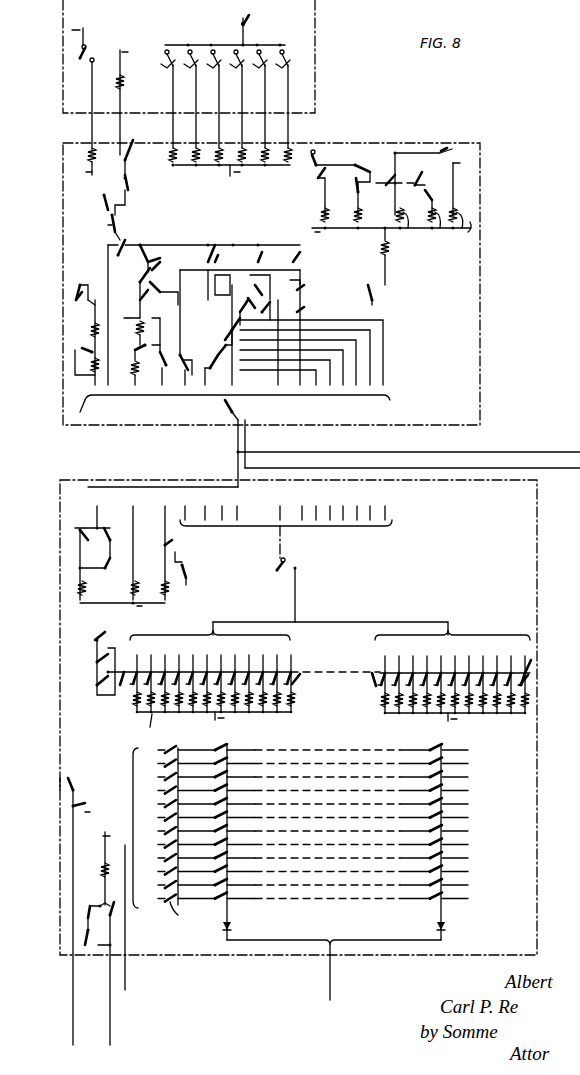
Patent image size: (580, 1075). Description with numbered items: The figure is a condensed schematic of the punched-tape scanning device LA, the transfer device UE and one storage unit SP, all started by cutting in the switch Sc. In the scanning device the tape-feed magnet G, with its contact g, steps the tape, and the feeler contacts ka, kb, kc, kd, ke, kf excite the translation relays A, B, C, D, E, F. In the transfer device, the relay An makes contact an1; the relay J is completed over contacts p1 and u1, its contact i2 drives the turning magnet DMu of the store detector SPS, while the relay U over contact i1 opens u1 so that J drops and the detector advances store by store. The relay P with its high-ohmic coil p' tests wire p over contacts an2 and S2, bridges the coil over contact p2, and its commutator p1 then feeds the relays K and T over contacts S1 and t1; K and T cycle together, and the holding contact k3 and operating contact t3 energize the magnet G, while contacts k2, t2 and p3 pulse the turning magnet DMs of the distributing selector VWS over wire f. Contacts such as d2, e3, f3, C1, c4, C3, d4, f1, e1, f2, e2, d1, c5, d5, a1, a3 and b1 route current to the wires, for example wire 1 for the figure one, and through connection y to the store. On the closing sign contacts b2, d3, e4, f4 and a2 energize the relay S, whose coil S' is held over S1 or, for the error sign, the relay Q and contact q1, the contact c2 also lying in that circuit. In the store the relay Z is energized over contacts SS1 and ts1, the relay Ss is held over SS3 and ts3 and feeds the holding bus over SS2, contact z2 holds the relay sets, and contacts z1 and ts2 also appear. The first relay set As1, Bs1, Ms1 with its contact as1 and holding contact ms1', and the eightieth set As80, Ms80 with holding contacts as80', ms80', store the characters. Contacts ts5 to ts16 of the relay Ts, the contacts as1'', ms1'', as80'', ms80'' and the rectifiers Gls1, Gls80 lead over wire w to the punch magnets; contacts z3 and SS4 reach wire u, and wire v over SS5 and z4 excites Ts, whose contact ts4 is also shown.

The punched-tape scanning device LA is at (317, 95).
The transfer device UE is at (482, 300).
The storage unit SP is at (540, 575).
The switch Sc is at (76, 52).
The relay An is at (88, 153).
The magnet of the tape movement G is at (127, 102).
The operating contact t3 is at (135, 149).
The holding contact k3 is at (130, 190).
The contact p3 is at (100, 202).
The contact t2 is at (104, 227).
The contact g is at (250, 22).
The contact ka is at (157, 99).
The contact kb is at (179, 85).
The contact kc is at (206, 85).
The contact kd is at (244, 48).
The contact ke is at (267, 48).
The contact kf is at (290, 55).
The relay A is at (168, 166).
The relay B is at (191, 168).
The relay C is at (213, 168).
The relay D is at (240, 168).
The relay E is at (262, 168).
The relay F is at (285, 168).
The contact an1 is at (318, 160).
The contactor i1 is at (327, 190).
The alternating contactor p1 is at (375, 160).
The holding contact u1 is at (346, 195).
The contact q1 is at (384, 184).
The commutator s1 S1 is at (417, 169).
The contact t1 is at (437, 181).
The relay U is at (320, 215).
The relay J is at (362, 215).
The high-ohmic coil S' is at (406, 228).
The relay K is at (433, 228).
The relay T is at (460, 228).
The turning magnet DMu is at (388, 252).
The contact i2 is at (385, 285).
The holding contact k2 is at (127, 246).
The contact b2 is at (150, 258).
The contact c2 is at (160, 262).
The contact d3 is at (140, 285).
The contact e4 is at (165, 294).
The contact f4 is at (140, 300).
The relay Q is at (145, 325).
The holding contact a2 is at (128, 351).
The relay S is at (123, 372).
The contact a3 is at (166, 359).
The contact b1 is at (240, 327).
The contact s2 S2 is at (85, 287).
The contact an2 is at (78, 295).
The relay P is at (92, 330).
The contact p2 is at (80, 350).
The high-ohmic coil P' p' is at (65, 368).
The store detector SPS is at (250, 410).
The contact a1 is at (225, 405).
The wire 1 is at (236, 425).
The wire y is at (246, 425).
The holding contact d2 is at (252, 232).
The holding contact e3 is at (280, 250).
The holding contact f3 is at (302, 270).
The working contact c1 C1 is at (219, 285).
The contact c4 is at (262, 287).
The contact c3 C3 is at (243, 302).
The contact d4 is at (266, 312).
The contact f1 is at (238, 310).
The contact e1 is at (230, 325).
The holding contact f2 is at (238, 343).
The holding contact e2 is at (232, 357).
The holding contact d1 is at (217, 368).
The contact c5 is at (306, 290).
The contact d5 is at (306, 312).
The distributing selector VWS is at (290, 565).
The contact z1 is at (75, 525).
The open-circuit contact ss1 SS1 is at (111, 532).
The open-circuit contact ts1 is at (105, 570).
The relay Z is at (78, 590).
The turning magnet DMs is at (132, 598).
The relay Ss is at (168, 592).
The contact ss3 SS3 is at (178, 548).
The open-circuit contact ts3 is at (197, 578).
The contact z2 is at (92, 640).
The contact ss2 SS2 is at (84, 664).
The contact ts2 is at (105, 688).
The contact as1 is at (118, 694).
The storage relay As of the first set As1 is at (140, 692).
The storage relay Bs of the first set Bs1 is at (166, 725).
The holding contact ms' ms1' is at (335, 682).
The storage relay Ms of the first set Ms1 is at (294, 692).
The storage relay As of the eightieth set As80 is at (385, 693).
The holding contact as' as80' is at (372, 667).
The holding contact ms' ms80' is at (511, 659).
The storage relay Ms of the eightieth set Ms80 is at (518, 707).
The contact ts5 is at (180, 750).
The contact ts16 is at (190, 912).
The contact as'' as1'' is at (245, 831).
The contact as'' as80'' is at (448, 831).
The rectifier Gls1 is at (230, 925).
The contact ms'' ms1'' is at (253, 906).
The rectifier Gls80 is at (444, 935).
The contact ms'' ms80'' is at (408, 914).
The wire w is at (334, 979).
The open-circuit contact z3 is at (62, 785).
The closed-circuit contact ss4 SS4 is at (88, 805).
The relay Ts is at (100, 872).
The open-circuit contact z4 is at (90, 906).
The contact ts4 is at (115, 910).
The closed-circuit contact ss5 SS5 is at (92, 950).
The wire u is at (69, 1054).
The wire v is at (107, 1054).